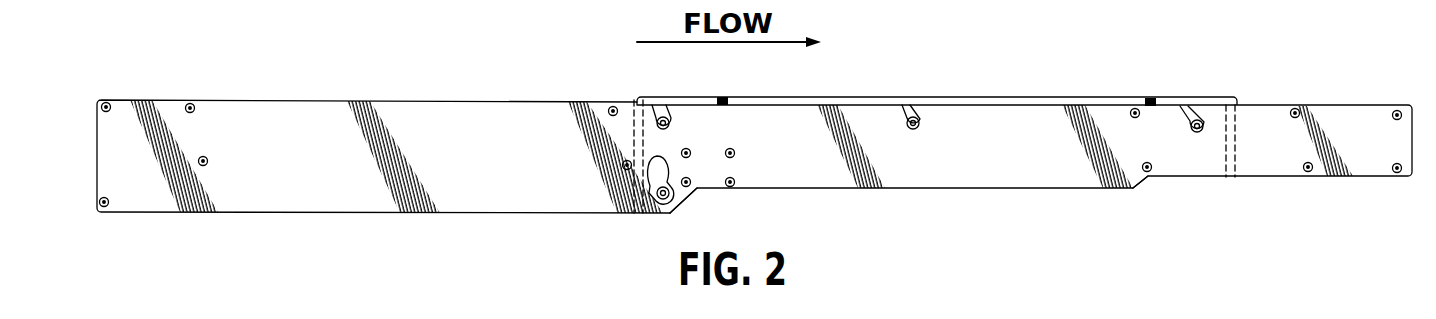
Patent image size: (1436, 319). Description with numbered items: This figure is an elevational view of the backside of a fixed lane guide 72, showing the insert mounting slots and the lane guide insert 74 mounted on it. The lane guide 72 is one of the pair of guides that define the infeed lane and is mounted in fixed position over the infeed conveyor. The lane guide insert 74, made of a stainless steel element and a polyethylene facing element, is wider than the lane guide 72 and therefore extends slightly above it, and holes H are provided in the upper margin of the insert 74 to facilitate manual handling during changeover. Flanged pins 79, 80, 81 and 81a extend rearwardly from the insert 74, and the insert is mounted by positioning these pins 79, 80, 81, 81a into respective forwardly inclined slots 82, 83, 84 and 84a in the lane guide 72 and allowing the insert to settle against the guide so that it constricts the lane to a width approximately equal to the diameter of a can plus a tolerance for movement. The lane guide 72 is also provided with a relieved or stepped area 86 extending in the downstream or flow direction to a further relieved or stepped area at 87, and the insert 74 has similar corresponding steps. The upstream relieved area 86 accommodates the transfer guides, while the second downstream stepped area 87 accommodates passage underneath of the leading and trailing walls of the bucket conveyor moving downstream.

The upstream lane guide 72 is at (454, 122).
The lane guide insert 74 is at (655, 104).
The flanged pin 79 is at (1192, 131).
The flanged pin 80 is at (919, 129).
The flanged pin 81 is at (671, 132).
The flanged pin 81a is at (671, 216).
The forwardly inclined slot 82 is at (1190, 105).
The forwardly inclined slot 83 is at (905, 105).
The forwardly inclined slot 84 is at (659, 104).
The forwardly inclined slot 84a is at (657, 180).
The relieved or stepped area 86 is at (684, 198).
The further relieved or stepped area 87 is at (1141, 184).
The holes H is at (724, 97).